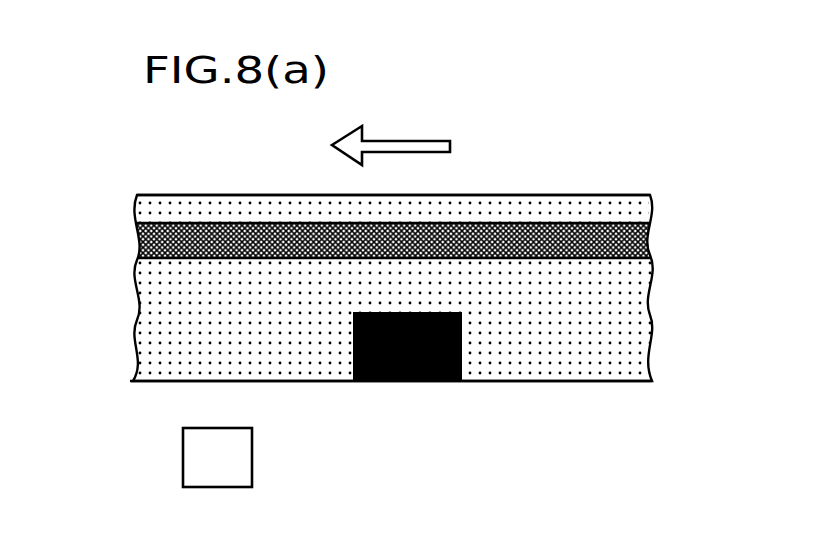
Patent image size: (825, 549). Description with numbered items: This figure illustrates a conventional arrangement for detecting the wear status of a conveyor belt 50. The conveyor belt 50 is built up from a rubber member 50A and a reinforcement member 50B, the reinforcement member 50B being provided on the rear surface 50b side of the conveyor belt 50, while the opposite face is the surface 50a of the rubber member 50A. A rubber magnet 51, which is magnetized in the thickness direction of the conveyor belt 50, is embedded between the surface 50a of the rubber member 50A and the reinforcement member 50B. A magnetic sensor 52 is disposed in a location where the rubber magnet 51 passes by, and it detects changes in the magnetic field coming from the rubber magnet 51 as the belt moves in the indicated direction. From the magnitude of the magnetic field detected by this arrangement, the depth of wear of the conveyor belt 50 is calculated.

The conveyor belt 50 is at (468, 296).
The rubber member 50A is at (608, 320).
The reinforcement member 50B is at (652, 221).
The surface of rubber member 50a is at (547, 382).
The rear surface of conveyor belt 50b is at (605, 194).
The rubber magnet 51 is at (400, 383).
The magnetic sensor 52 is at (232, 432).